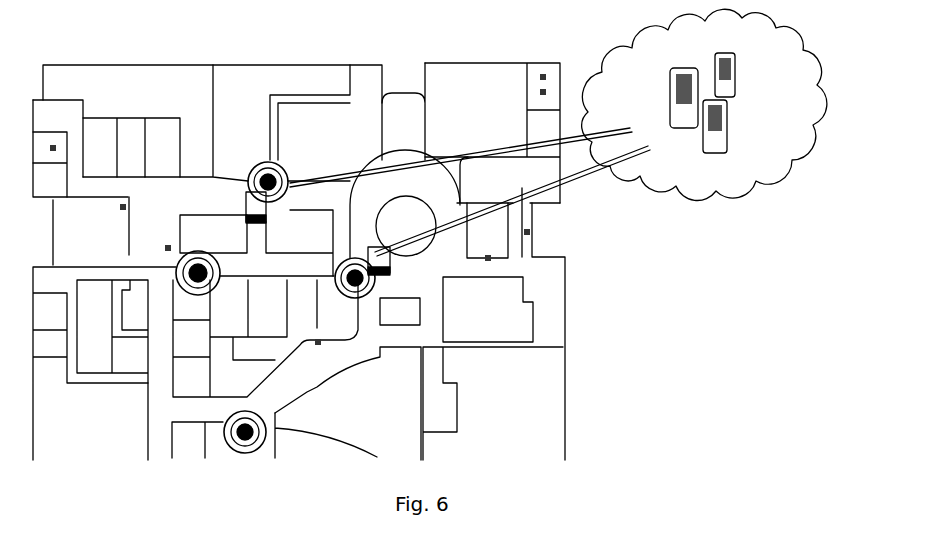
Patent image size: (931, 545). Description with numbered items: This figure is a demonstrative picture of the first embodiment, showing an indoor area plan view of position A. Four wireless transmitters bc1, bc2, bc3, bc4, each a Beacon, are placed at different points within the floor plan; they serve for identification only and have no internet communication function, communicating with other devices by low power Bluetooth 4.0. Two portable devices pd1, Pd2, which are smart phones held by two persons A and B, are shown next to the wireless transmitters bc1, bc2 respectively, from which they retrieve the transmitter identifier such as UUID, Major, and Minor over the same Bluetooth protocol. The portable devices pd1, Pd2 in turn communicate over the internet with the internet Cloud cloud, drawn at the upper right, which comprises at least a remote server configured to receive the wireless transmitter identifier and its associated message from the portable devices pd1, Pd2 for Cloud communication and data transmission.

The wireless transmitter bc1 is at (287, 168).
The wireless transmitter bc2 is at (353, 257).
The wireless transmitter bc3 is at (178, 270).
The wireless transmitter bc4 is at (255, 413).
The portable device pd1 is at (243, 205).
The portable device Pd2 is at (393, 266).
The internet Cloud cloud is at (704, 104).